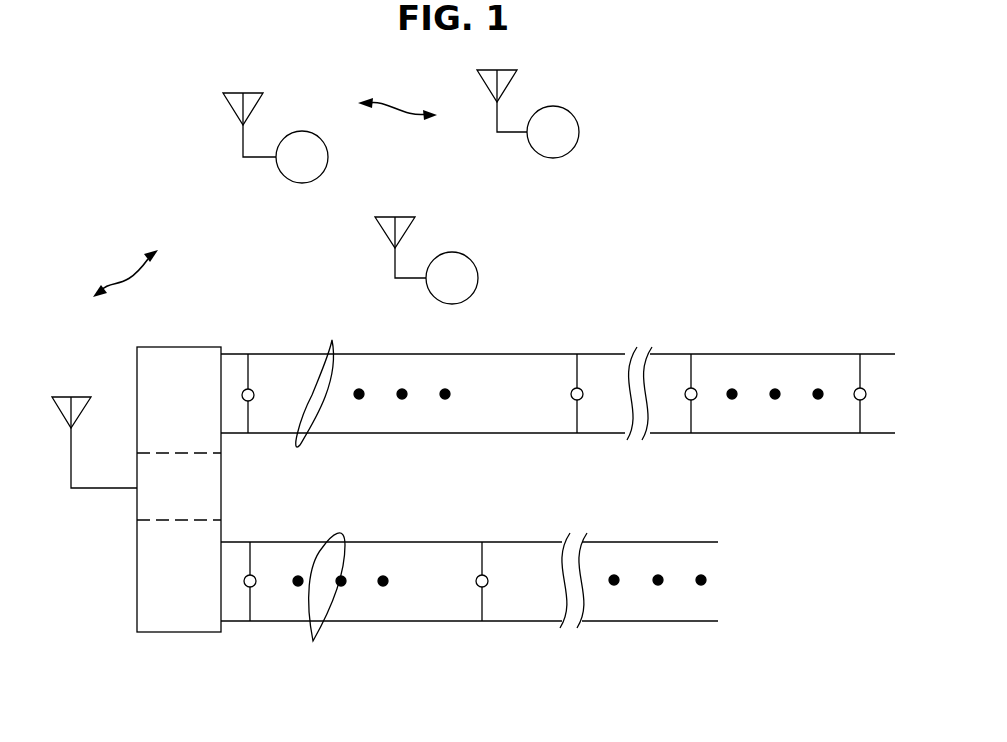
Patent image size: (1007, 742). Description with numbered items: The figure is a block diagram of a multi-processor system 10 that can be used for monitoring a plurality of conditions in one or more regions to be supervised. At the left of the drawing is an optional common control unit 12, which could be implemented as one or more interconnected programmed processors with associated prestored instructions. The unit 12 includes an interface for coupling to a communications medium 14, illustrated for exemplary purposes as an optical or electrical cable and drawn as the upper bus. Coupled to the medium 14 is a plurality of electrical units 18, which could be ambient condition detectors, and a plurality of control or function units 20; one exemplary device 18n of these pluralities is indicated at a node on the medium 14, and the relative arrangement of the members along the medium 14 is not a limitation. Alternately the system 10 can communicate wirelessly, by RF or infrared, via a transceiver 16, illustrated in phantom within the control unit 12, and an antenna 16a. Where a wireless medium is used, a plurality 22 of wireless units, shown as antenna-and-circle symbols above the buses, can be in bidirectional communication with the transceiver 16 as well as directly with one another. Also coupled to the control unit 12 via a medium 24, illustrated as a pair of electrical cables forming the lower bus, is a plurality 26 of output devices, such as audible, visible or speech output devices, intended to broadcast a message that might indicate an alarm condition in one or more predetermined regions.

The multi-processor system 10 is at (796, 197).
The common control unit 12 is at (137, 575).
The communications medium 14 is at (332, 340).
The transceiver 16 is at (222, 502).
The antenna 16a is at (76, 395).
The electrical units 18 is at (490, 334).
The device 18n is at (583, 398).
The control or function units 20 is at (745, 318).
The plurality of wireless units 22 is at (640, 161).
The medium 24 is at (313, 641).
The plurality of output devices 26 is at (527, 661).